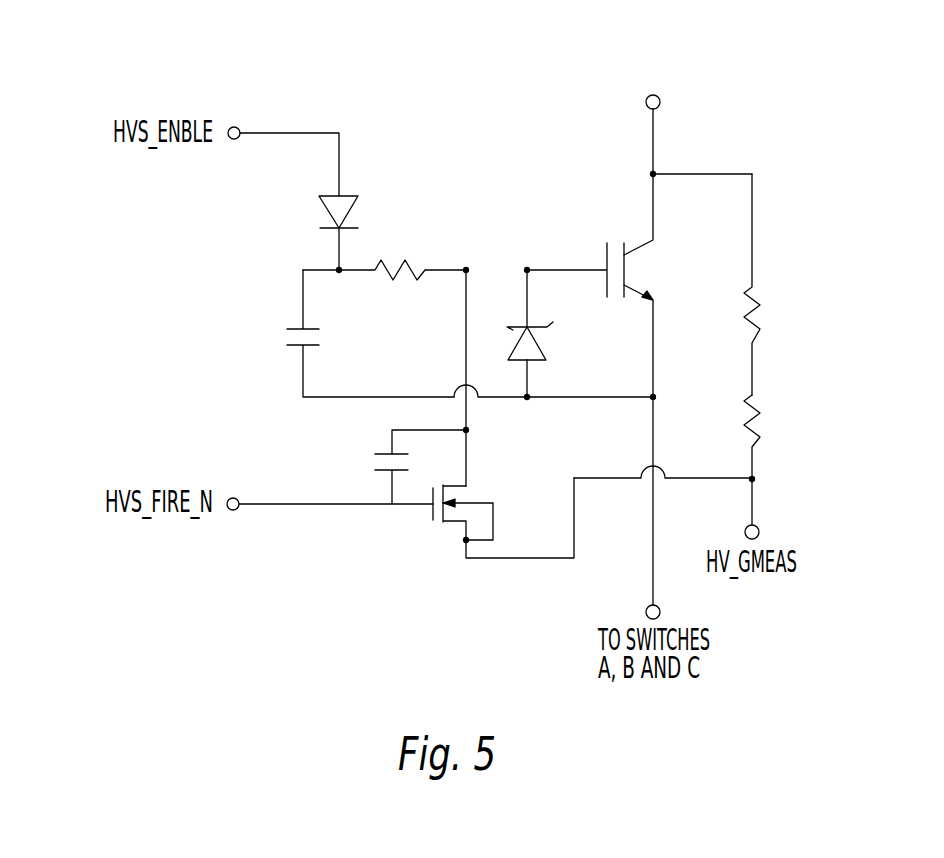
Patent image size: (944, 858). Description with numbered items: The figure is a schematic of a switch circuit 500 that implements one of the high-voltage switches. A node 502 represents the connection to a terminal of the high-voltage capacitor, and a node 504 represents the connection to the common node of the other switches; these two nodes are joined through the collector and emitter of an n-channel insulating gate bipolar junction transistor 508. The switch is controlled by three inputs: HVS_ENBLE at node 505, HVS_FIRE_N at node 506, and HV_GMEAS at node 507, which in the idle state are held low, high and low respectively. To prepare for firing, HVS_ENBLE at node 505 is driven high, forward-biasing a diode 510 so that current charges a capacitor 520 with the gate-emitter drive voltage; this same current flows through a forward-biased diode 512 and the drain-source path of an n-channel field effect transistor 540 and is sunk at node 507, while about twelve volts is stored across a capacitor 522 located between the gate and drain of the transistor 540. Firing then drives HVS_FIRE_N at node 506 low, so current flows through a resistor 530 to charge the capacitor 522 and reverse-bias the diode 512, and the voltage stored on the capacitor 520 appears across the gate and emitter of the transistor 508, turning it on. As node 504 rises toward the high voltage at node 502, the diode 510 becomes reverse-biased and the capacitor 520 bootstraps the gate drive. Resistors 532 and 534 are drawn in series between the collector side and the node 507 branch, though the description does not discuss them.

The switch circuit 500 is at (118, 33).
The node 502 is at (656, 132).
The node 504 is at (651, 584).
The node 505 is at (288, 132).
The node 506 is at (280, 503).
The node 507 is at (756, 501).
The insulating gate npn bipolar junction transistor 508 is at (627, 270).
The diode 510 is at (330, 220).
The diode 512 is at (537, 341).
The capacitor 520 is at (296, 327).
The capacitor 522 is at (382, 453).
The resistor 530 is at (405, 267).
The resistor 532 is at (760, 318).
The resistor 534 is at (760, 425).
The field effect transistor 540 is at (496, 505).